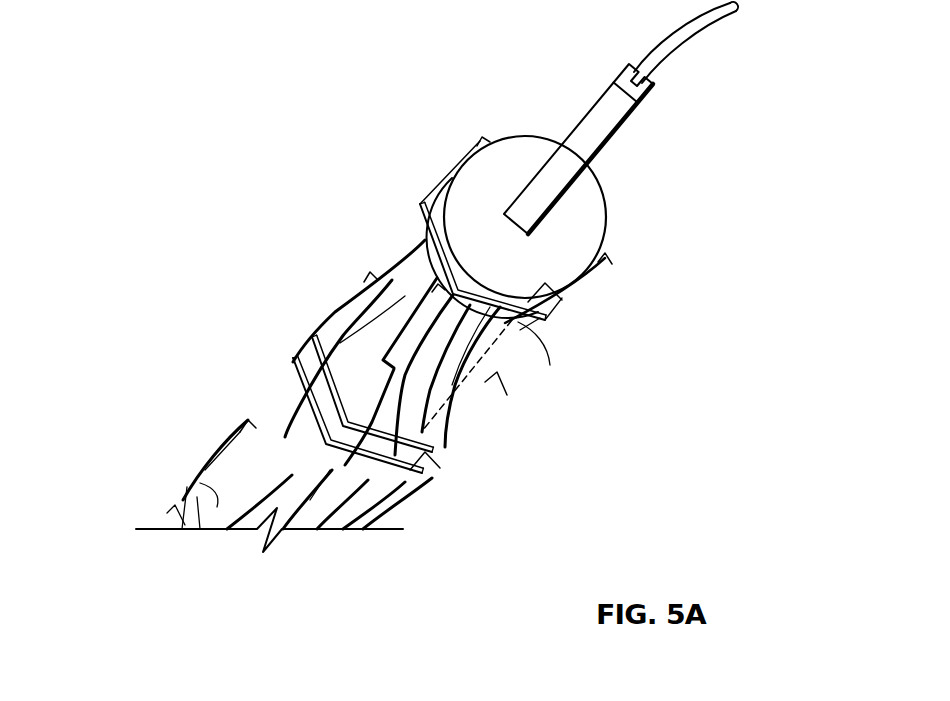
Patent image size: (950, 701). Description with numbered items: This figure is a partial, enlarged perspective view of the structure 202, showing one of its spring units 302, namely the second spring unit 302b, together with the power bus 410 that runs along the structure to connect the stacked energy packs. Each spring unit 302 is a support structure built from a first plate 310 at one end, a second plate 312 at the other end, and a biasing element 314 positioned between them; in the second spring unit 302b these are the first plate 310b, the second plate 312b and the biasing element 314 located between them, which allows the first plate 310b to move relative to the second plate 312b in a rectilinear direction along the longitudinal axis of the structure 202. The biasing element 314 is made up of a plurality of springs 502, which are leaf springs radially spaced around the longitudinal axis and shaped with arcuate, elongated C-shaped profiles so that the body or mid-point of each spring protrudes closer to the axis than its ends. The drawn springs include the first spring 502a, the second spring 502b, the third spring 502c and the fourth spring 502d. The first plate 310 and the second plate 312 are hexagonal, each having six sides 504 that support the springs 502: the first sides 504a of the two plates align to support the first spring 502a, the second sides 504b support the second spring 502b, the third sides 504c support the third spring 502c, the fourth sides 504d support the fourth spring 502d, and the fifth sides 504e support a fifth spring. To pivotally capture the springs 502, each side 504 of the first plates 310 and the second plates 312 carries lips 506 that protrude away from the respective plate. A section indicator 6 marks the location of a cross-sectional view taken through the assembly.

The structure 202 is at (236, 66).
The power bus 410 is at (663, 44).
The spring unit 302 is at (355, 227).
The second spring unit 302b is at (317, 286).
The first plate 310 is at (399, 218).
The first plate of second spring unit 310b is at (412, 215).
The second plate 312 is at (270, 404).
The second plate of second spring unit 312b is at (345, 358).
The sides 504 is at (406, 309).
The first sides 504a is at (460, 438).
The second sides 504b is at (423, 478).
The third sides 504c is at (393, 222).
The fourth sides 504d is at (421, 200).
The fifth sides 504e is at (367, 276).
The springs 502 is at (364, 412).
The first spring 502a is at (477, 398).
The second spring 502b is at (405, 430).
The third spring 502c is at (323, 345).
The fourth spring 502d is at (373, 270).
The biasing element 314 is at (190, 482).
The lips 506 is at (313, 505).
The section line 6 is at (545, 285).